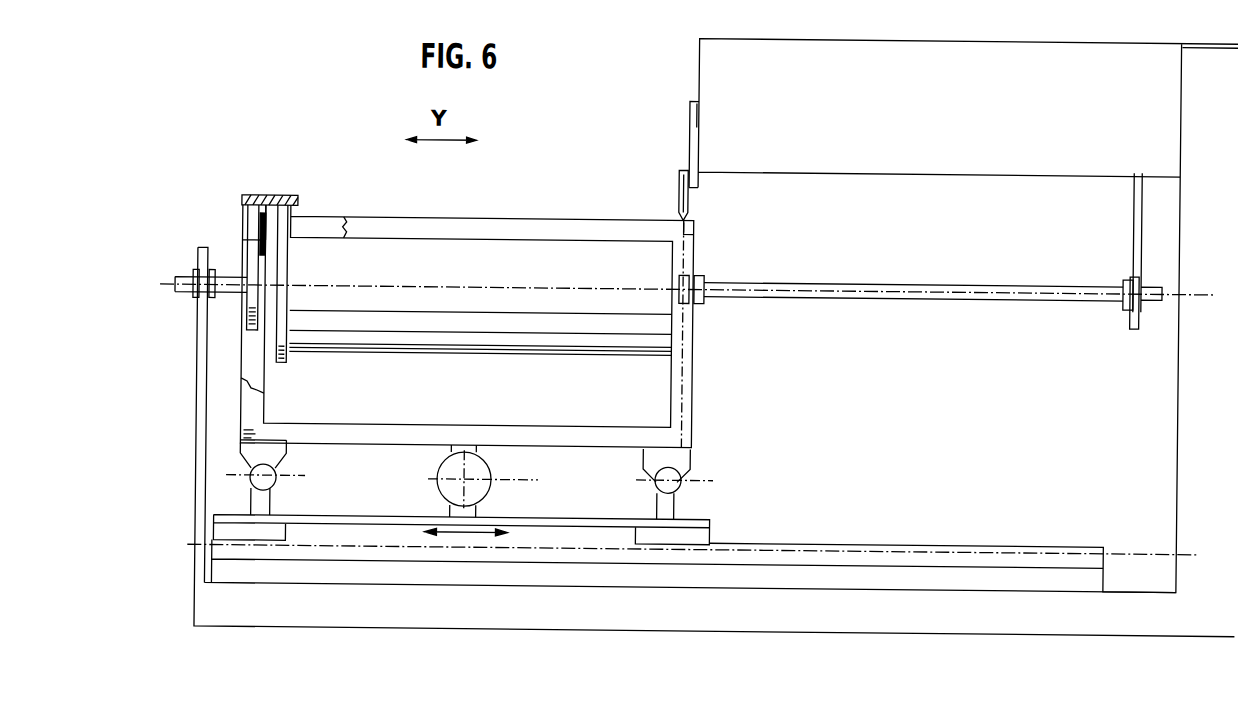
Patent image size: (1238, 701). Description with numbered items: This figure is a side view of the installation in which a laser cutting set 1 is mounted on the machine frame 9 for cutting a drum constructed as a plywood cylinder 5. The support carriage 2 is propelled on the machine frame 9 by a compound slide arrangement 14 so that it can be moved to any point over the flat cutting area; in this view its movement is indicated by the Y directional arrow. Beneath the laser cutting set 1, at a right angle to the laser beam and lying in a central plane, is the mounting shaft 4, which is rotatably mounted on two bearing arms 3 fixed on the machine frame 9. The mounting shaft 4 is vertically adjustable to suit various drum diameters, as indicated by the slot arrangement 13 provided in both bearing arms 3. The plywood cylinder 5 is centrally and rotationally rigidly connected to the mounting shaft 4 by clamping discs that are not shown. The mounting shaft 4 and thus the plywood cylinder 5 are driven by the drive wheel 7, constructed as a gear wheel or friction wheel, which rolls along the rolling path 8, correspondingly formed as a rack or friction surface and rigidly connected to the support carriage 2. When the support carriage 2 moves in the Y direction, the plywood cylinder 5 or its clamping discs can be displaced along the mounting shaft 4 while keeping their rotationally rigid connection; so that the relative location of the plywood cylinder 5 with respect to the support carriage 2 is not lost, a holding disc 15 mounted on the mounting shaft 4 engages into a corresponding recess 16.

The laser cutting set 1 is at (678, 204).
The support carriage 2 is at (683, 420).
The bearing arms 3 is at (203, 363).
The mounting shaft 4 is at (885, 291).
The plywood cylinder 5 is at (452, 342).
The drive wheel 7 is at (283, 339).
The rolling path 8 is at (296, 201).
The machine frame 9 is at (937, 52).
The slot arrangement 13 is at (203, 262).
The compound slide arrangement 14 is at (703, 516).
The holding disc 15 is at (253, 313).
The recess 16 is at (253, 221).